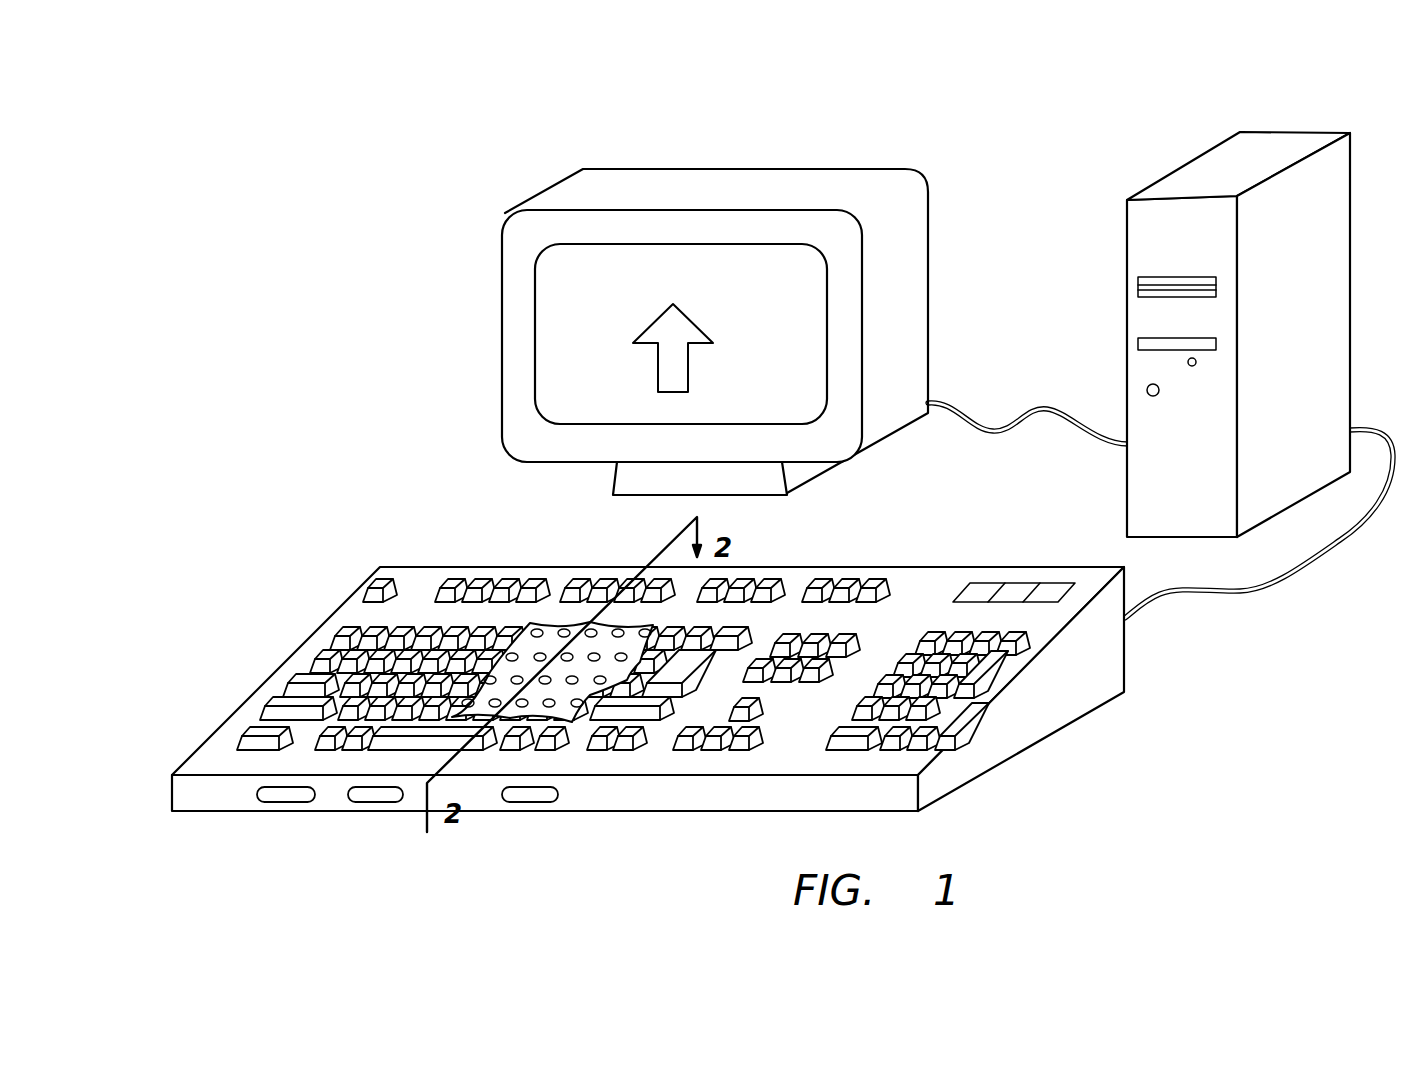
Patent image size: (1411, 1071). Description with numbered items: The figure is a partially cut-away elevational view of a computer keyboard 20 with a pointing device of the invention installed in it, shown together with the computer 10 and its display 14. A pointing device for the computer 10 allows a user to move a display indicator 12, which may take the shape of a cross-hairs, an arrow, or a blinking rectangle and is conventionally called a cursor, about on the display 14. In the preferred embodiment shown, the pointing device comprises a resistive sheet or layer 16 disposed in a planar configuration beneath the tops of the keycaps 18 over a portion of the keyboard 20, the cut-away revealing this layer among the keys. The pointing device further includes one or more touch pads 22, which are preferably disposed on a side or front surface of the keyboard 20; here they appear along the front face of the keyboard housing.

The computer 10 is at (1153, 160).
The display indicator 12 is at (670, 358).
The display 14 is at (523, 437).
The resistive sheet 16 is at (548, 628).
The keycaps 18 is at (370, 635).
The keyboard 20 is at (283, 643).
The touch pads 22 is at (383, 795).